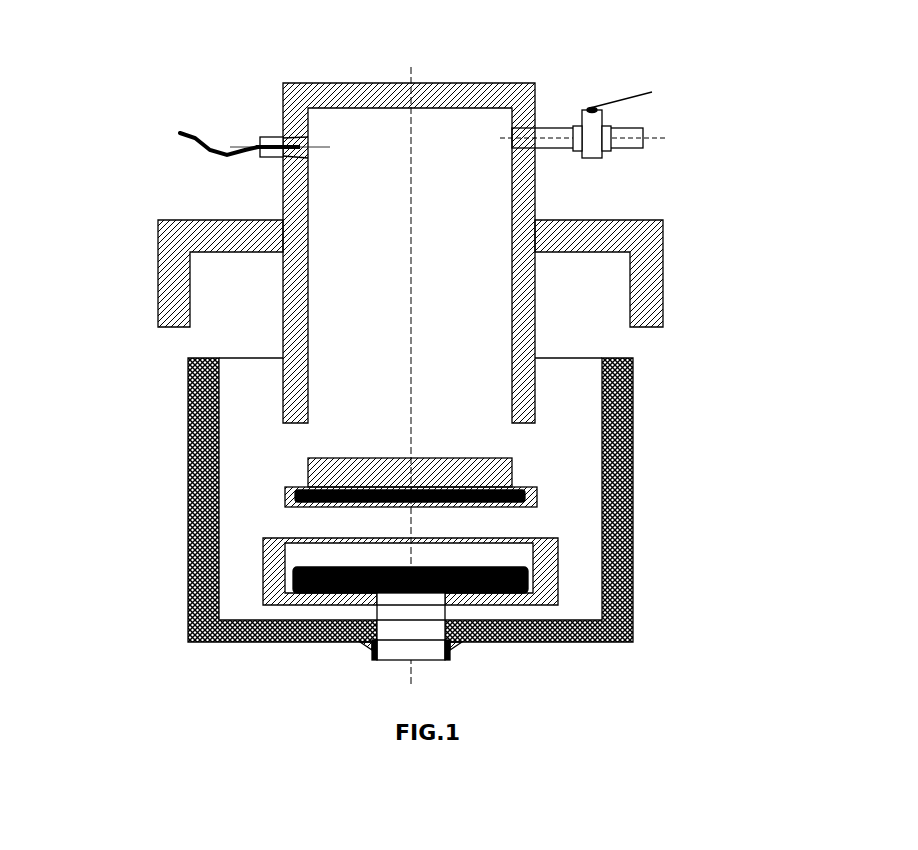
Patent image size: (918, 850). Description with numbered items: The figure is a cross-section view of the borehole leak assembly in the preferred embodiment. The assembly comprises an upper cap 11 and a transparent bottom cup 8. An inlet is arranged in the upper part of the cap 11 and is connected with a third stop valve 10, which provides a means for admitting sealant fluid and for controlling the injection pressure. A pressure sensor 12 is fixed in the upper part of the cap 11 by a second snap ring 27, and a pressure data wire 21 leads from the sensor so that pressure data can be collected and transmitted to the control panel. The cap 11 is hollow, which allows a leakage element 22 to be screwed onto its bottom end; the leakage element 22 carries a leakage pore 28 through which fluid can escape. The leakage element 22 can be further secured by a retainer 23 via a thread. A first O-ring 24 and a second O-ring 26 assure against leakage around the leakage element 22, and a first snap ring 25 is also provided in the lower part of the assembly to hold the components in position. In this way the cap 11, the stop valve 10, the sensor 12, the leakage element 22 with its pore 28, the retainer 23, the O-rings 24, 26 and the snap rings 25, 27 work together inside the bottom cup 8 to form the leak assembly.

The bottom cup 8 is at (480, 500).
The third stop valve 10 is at (641, 122).
The upper cap 11 is at (470, 222).
The pressure sensor 12 is at (169, 127).
The pressure data wire 21 is at (184, 140).
The leakage element 22 is at (538, 470).
The retainer 23 is at (537, 566).
The first O-ring 24 is at (298, 564).
The first snap ring 25 is at (571, 626).
The second O-ring 26 is at (287, 464).
The second snap ring 27 is at (160, 120).
The leakage pore 28 is at (545, 445).